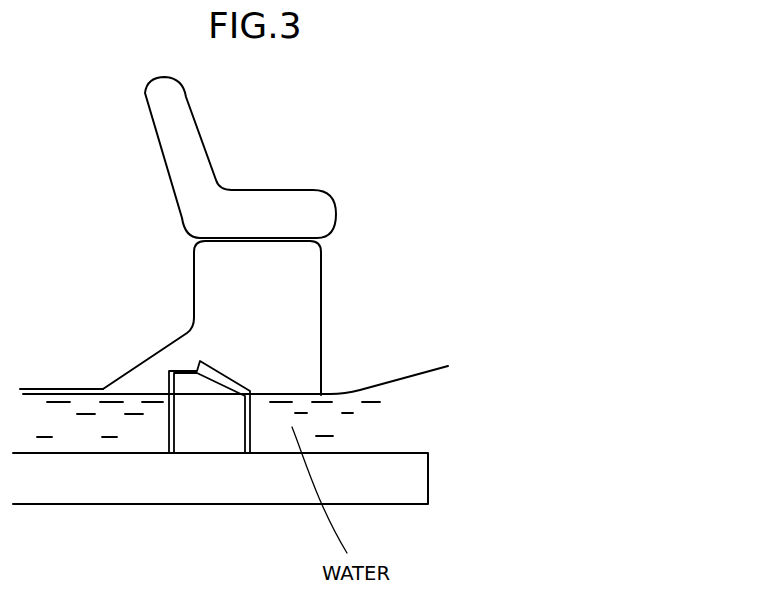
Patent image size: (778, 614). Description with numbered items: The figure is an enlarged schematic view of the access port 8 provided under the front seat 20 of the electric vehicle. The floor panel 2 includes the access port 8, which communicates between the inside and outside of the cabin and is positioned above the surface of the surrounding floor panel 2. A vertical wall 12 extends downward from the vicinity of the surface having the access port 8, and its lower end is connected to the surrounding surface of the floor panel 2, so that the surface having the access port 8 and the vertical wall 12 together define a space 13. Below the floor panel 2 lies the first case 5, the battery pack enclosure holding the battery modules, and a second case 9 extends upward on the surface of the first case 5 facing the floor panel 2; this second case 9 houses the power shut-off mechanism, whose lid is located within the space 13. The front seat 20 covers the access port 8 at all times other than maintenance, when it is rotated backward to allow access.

The floor panel 2 is at (413, 370).
The first case 5 is at (220, 493).
The access port 8 is at (275, 155).
The second case 9 is at (187, 383).
The vertical wall 12 is at (193, 263).
The space 13 is at (247, 312).
The front seat 20 is at (185, 142).